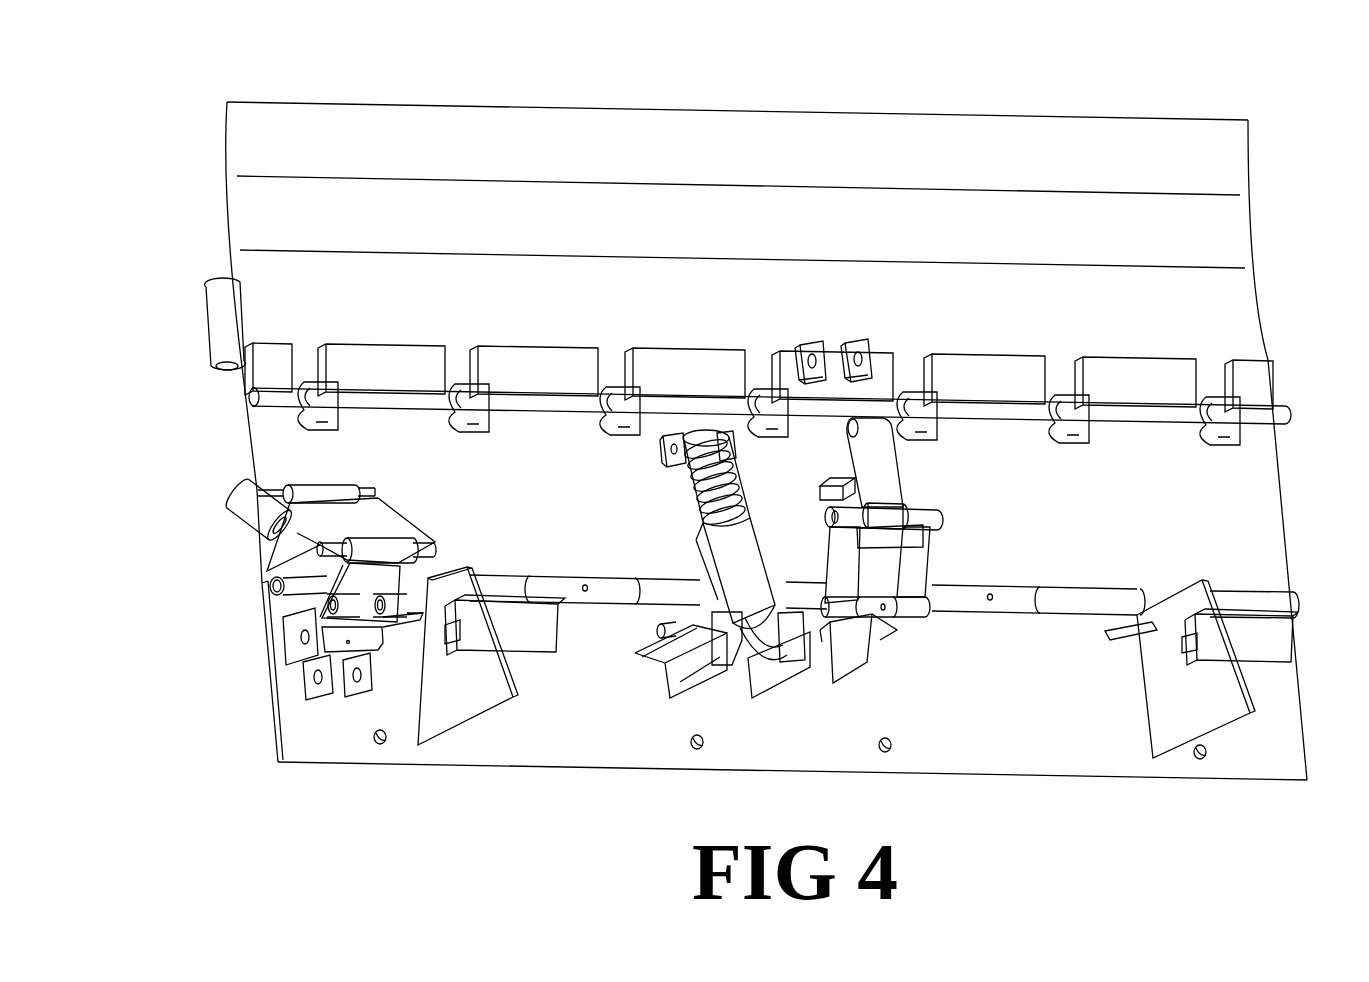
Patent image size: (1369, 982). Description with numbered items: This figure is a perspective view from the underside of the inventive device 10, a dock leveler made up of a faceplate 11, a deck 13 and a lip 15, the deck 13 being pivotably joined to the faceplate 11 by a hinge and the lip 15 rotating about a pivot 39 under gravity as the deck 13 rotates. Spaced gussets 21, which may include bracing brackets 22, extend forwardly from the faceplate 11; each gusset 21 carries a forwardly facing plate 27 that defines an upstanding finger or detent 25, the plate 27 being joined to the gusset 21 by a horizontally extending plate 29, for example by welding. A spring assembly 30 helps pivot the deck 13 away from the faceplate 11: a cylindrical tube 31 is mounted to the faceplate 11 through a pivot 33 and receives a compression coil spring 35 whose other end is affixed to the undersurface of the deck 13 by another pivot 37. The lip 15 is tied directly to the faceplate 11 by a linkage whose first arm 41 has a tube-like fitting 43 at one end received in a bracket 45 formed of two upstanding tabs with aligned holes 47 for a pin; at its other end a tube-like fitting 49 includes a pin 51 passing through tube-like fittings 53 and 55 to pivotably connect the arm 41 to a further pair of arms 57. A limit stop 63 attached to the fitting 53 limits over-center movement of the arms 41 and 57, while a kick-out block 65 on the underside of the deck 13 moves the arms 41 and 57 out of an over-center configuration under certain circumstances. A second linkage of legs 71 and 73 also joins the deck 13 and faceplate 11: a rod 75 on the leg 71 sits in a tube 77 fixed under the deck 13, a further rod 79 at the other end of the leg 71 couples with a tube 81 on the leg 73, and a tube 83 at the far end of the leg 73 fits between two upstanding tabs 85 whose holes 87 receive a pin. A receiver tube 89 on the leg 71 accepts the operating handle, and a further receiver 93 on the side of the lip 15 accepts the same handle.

The inventive device 10 is at (768, 84).
The faceplate 11 is at (996, 708).
The deck 13 is at (1252, 512).
The lip 15 is at (1232, 232).
The gussets 21 is at (470, 700).
The bracing brackets 22 is at (1135, 640).
The upstanding finger or detent 25 is at (543, 600).
The forwardly facing plates 27 is at (493, 613).
The horizontally extending plate 29 is at (452, 636).
The spring assembly 30 is at (670, 513).
The cylindrical tube 31 is at (737, 549).
The pivot 33 is at (745, 675).
The compression coil spring 35 is at (735, 492).
The pivot 37 is at (668, 452).
The pivot 39 is at (1265, 417).
The first arm 41 is at (880, 477).
The tube-like fitting 43 is at (867, 433).
The bracket 45 is at (866, 346).
The holes 47 is at (850, 358).
The tube-like fitting 49 is at (915, 503).
The pin 51 is at (834, 524).
The fitting 53 is at (893, 510).
The fitting 55 is at (940, 525).
The arms 57 is at (938, 567).
The limit stop 63 is at (885, 545).
The kick-out block 65 is at (820, 494).
The leg 71 is at (372, 523).
The leg 73 is at (358, 583).
The rod 75 is at (370, 492).
The tube 77 is at (332, 488).
The rod 79 is at (434, 549).
The tube 81 is at (395, 548).
The tube 83 is at (340, 642).
The upstanding tabs 85 is at (292, 653).
The hole 87 is at (303, 636).
The receiver tube 89 is at (258, 505).
The receiver 93 is at (222, 340).